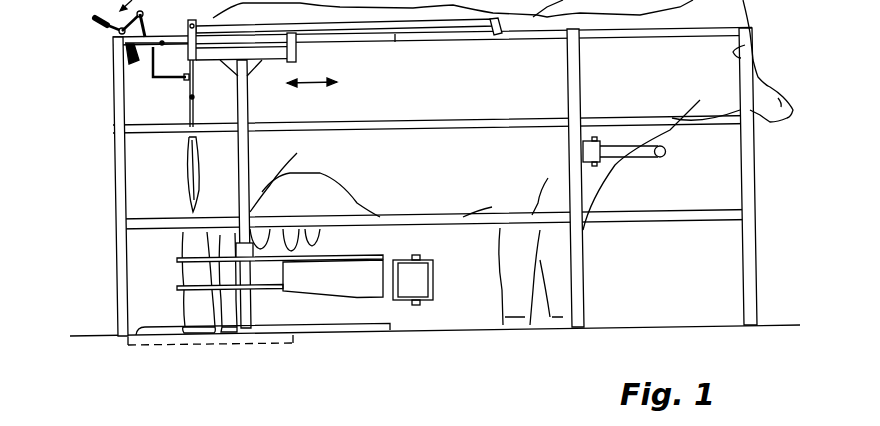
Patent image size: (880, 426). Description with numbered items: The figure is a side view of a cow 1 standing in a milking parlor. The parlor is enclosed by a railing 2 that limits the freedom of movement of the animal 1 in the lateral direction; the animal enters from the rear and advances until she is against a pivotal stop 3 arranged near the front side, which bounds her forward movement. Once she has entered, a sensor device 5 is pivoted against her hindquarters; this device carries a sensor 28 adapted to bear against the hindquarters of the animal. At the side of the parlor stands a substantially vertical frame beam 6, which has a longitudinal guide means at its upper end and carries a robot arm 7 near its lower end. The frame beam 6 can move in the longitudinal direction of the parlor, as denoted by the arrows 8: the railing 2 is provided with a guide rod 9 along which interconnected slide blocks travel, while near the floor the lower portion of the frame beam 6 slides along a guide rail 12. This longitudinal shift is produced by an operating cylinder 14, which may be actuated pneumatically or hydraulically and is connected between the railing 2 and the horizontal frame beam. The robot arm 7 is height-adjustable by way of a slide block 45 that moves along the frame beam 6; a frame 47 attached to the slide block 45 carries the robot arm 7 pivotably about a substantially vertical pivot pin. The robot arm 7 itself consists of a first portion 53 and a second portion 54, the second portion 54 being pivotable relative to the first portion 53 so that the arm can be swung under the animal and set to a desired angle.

The cow 1 is at (713, 8).
The railing 2 is at (383, 133).
The pivotal stop 3 is at (640, 150).
The sensor device 5 is at (173, 88).
The vertical frame beam 6 is at (240, 177).
The robot arm 7 is at (367, 248).
The arrows 8 is at (312, 69).
The guide rod 9 is at (365, 40).
The guide rail 12 is at (355, 333).
The operating cylinder 14 is at (473, 27).
The sensor 28 is at (197, 86).
The slide block 45 is at (243, 272).
The frame 47 is at (203, 243).
The first portion of robot arm 53 is at (338, 280).
The second portion of robot arm 54 is at (425, 280).